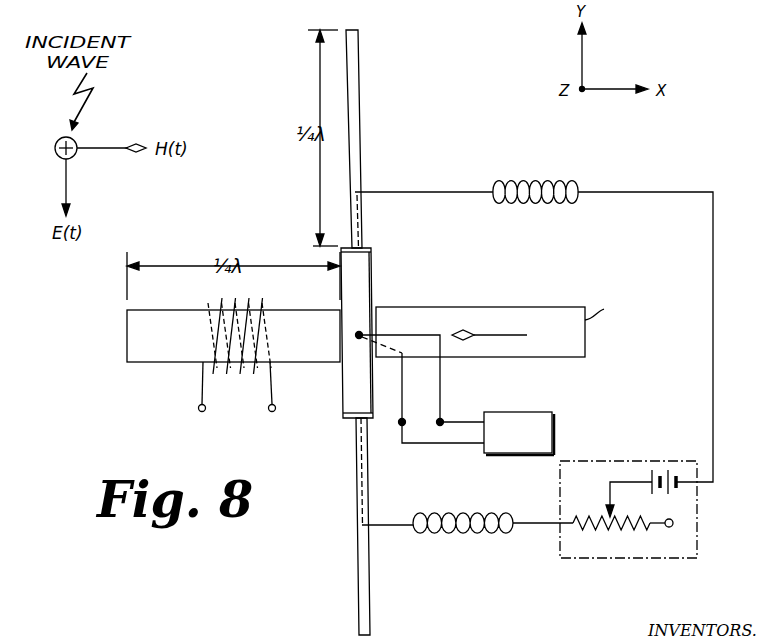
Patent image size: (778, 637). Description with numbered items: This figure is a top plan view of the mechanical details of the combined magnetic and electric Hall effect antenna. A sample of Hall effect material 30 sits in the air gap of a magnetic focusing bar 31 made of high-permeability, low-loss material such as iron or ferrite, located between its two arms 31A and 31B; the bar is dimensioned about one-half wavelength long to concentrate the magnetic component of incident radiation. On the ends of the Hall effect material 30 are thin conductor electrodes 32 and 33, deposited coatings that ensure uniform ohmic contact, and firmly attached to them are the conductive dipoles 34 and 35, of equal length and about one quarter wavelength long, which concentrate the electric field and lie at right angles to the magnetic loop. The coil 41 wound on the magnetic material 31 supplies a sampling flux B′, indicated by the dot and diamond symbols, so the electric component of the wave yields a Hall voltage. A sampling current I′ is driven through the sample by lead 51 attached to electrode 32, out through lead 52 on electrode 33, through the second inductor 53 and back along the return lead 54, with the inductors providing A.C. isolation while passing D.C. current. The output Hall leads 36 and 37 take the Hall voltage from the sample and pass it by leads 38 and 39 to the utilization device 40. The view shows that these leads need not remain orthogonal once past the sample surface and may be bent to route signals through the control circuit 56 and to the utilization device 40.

The Hall effect material 30 is at (360, 330).
The magnetic focusing bar 31 is at (381, 336).
The arm of the magnetic focusing bar 31A is at (510, 310).
The arm of the magnetic focusing bar 31B is at (315, 356).
The electrode 32 is at (345, 420).
The electrode 33 is at (371, 247).
The dipole 34 is at (358, 602).
The dipole 35 is at (357, 113).
The output Hall lead 36 is at (408, 333).
The output Hall lead 37 is at (404, 403).
The lead 38 is at (442, 389).
The lead 39 is at (437, 444).
The utilization device 40 is at (522, 416).
The coil 41 is at (209, 301).
The lead 51 is at (393, 524).
The lead 52 is at (403, 191).
The second inductor 53 is at (521, 182).
The return lead 54 is at (712, 251).
The control circuit 56 is at (573, 560).